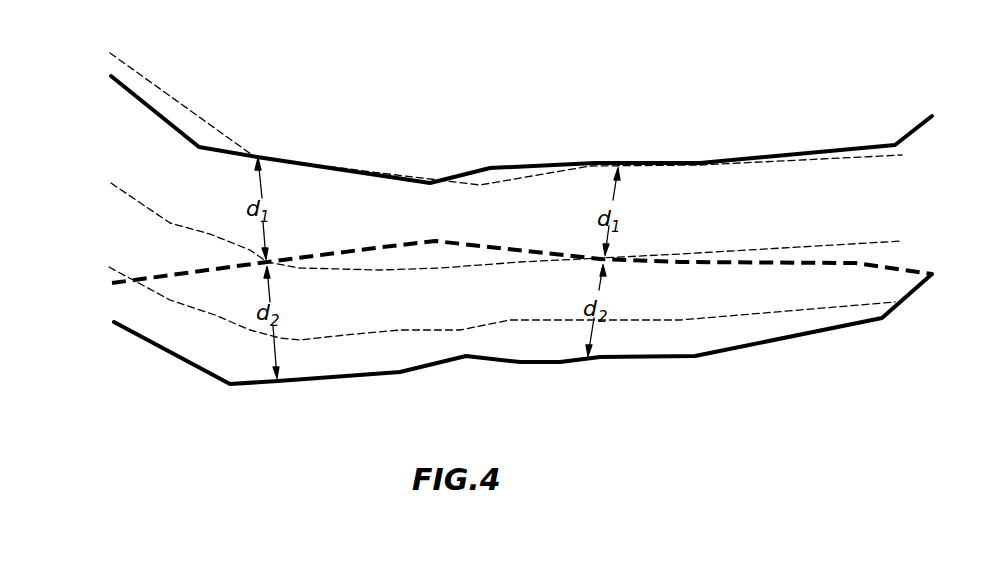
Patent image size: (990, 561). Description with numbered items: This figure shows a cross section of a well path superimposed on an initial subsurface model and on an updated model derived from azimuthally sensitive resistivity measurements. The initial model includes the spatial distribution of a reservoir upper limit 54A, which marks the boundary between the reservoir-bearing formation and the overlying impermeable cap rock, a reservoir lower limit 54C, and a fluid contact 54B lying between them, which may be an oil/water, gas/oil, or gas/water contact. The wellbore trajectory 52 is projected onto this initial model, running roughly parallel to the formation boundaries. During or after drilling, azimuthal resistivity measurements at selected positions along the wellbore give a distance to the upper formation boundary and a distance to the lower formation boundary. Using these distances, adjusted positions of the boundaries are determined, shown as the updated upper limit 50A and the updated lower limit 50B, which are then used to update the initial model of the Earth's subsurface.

The updated upper limit 50A is at (770, 152).
The updated lower limit 50B is at (440, 368).
The wellbore trajectory 52 is at (375, 247).
The reservoir upper limit 54A is at (862, 160).
The fluid contact 54B is at (455, 270).
The reservoir lower limit 54C is at (345, 335).